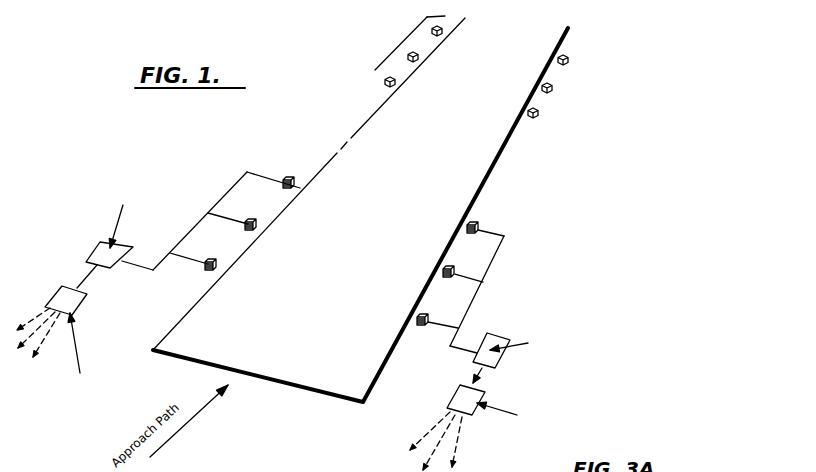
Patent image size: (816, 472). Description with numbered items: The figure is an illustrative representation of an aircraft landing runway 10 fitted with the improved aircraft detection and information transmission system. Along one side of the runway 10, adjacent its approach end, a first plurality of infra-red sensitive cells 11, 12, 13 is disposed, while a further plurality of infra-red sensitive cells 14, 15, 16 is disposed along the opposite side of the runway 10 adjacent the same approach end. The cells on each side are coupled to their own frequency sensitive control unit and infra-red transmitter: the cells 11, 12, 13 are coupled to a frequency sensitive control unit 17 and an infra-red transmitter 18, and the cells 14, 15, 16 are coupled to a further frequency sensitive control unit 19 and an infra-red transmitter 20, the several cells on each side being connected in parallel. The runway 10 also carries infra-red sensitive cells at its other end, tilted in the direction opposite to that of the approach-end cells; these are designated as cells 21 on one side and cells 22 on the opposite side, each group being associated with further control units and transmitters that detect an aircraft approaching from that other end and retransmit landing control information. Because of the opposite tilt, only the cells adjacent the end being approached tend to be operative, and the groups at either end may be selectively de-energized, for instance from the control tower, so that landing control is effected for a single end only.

The runway 10 is at (443, 152).
The infra-red sensitive cell 11 is at (215, 268).
The infra-red sensitive cell 12 is at (255, 228).
The infra-red sensitive cell 13 is at (294, 185).
The infra-red sensitive cell 14 is at (417, 320).
The infra-red sensitive cell 15 is at (443, 272).
The infra-red sensitive cell 16 is at (467, 226).
The frequency sensitive control unit 17 is at (115, 248).
The infra-red transmitter 18 is at (75, 293).
The frequency sensitive control unit 19 is at (507, 333).
The infra-red transmitter 20 is at (475, 393).
The cells 21 is at (389, 69).
The cells 22 is at (550, 122).